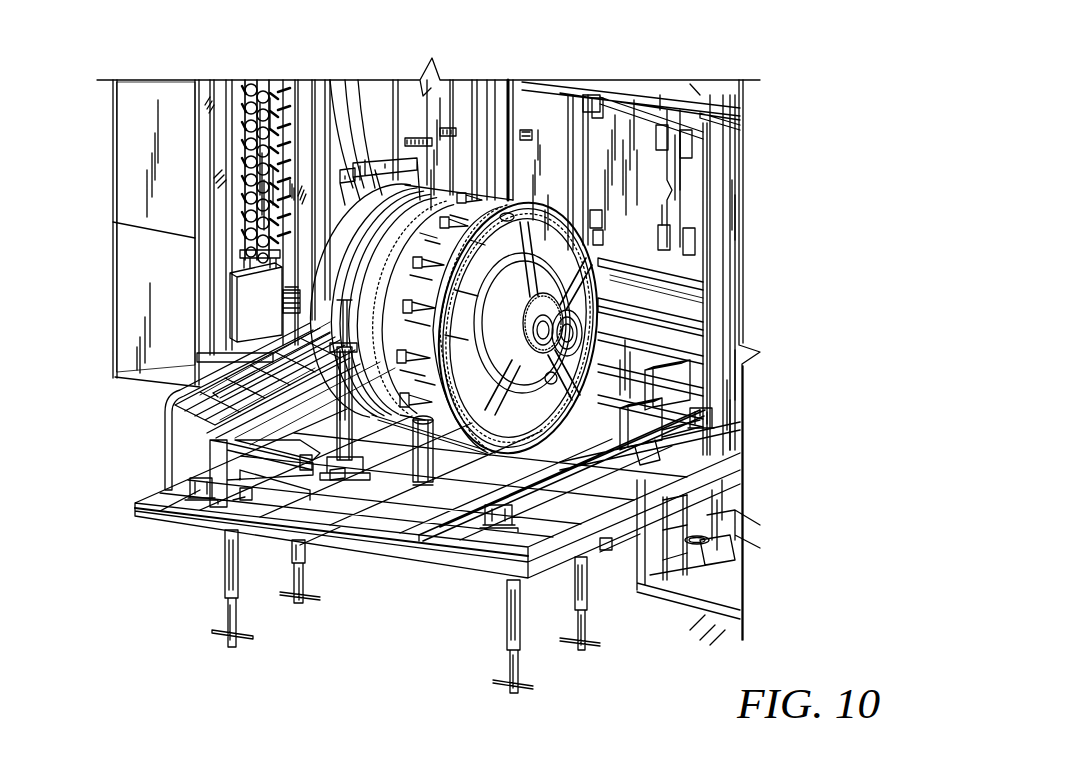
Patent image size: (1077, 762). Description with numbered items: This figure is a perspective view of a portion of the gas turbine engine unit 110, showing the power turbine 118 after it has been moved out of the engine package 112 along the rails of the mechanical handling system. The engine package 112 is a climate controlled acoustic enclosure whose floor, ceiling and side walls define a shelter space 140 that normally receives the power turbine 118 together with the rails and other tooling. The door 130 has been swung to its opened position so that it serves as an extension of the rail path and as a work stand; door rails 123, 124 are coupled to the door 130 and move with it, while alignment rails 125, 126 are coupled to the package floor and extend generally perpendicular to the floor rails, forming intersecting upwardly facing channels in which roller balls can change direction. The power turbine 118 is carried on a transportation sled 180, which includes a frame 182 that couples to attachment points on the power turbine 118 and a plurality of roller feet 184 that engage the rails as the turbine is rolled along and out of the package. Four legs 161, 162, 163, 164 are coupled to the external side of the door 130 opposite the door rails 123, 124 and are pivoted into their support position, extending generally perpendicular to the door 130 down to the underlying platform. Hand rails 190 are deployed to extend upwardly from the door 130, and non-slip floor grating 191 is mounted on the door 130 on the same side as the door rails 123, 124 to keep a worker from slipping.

The gas turbine engine unit 110 is at (107, 122).
The engine package 112 is at (128, 183).
The power turbine 118 is at (521, 188).
The door rail 123 is at (215, 397).
The door rail 124 is at (608, 460).
The alignment rail 125 is at (680, 350).
The alignment rail 126 is at (682, 320).
The door 130 is at (130, 518).
The shelter space 140 is at (365, 108).
The leg 161 is at (220, 572).
The leg 162 is at (502, 618).
The leg 163 is at (307, 565).
The leg 164 is at (590, 600).
The transportation sled 180 is at (217, 440).
The frame 182 is at (287, 483).
The roller feet 184 is at (197, 482).
The hand rails 190 is at (195, 380).
The non-slip floor grating 191 is at (180, 470).